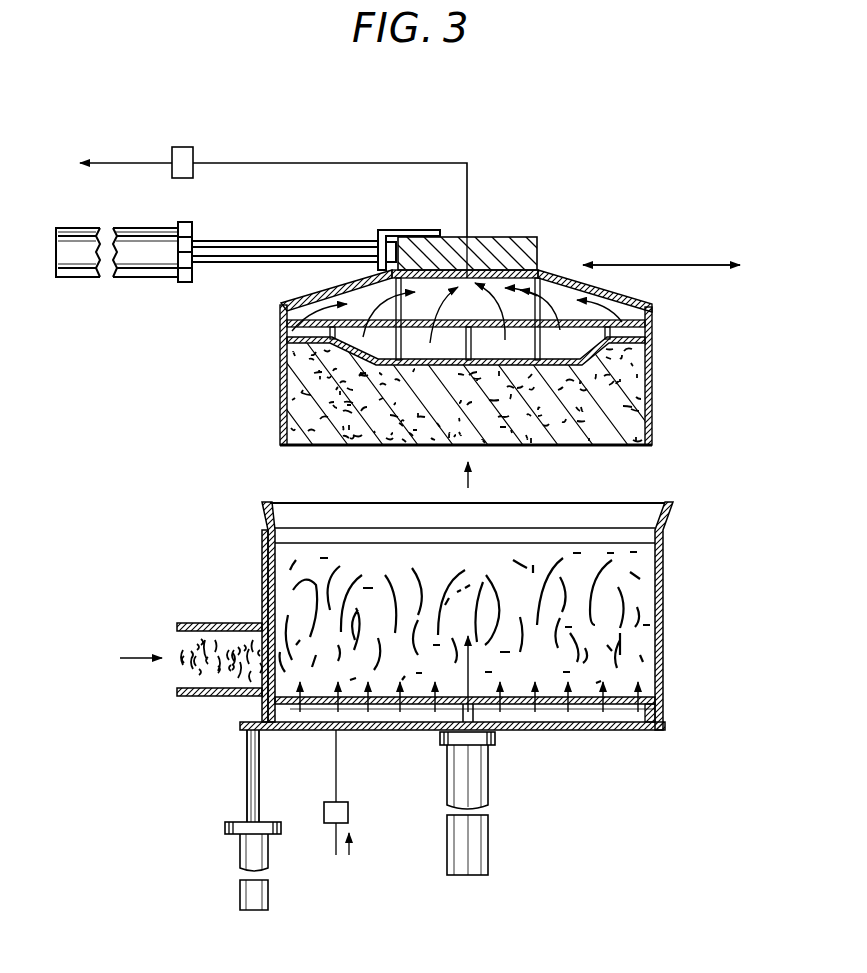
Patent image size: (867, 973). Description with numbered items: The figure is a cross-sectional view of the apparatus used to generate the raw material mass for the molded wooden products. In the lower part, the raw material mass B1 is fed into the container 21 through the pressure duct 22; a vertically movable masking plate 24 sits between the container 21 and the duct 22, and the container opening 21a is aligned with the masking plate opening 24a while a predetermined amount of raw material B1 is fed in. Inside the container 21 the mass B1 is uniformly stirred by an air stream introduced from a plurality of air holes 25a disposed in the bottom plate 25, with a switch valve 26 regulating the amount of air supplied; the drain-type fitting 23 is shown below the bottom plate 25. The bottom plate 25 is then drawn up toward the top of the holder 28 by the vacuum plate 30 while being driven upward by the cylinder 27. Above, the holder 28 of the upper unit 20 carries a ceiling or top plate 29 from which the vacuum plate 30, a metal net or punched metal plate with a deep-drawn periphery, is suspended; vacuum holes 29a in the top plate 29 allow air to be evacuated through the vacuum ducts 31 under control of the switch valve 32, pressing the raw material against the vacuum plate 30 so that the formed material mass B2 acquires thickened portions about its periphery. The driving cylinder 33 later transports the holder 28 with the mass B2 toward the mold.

The upper filter unit (hood) 20 is at (278, 402).
The container 21 is at (267, 508).
The container opening 21a is at (268, 616).
The pressure duct 22 is at (214, 624).
The drain valve 23 is at (238, 844).
The masking plate 24 is at (262, 716).
The masking plate opening 24a is at (266, 563).
The bottom plate 25 is at (588, 704).
The air holes 25a is at (400, 706).
The switch valve 26 is at (350, 812).
The cylinder 27 is at (470, 868).
The holder 28 is at (652, 409).
The ceiling (top plate) 29 is at (595, 319).
The vacuum holes 29a is at (286, 328).
The vacuum plate 30 is at (292, 342).
The vacuum ducts 31 is at (340, 162).
The switch valve 32 is at (186, 148).
The driving cylinder 33 is at (158, 233).
The raw material mass B1 is at (654, 630).
The material mass B2 is at (602, 440).